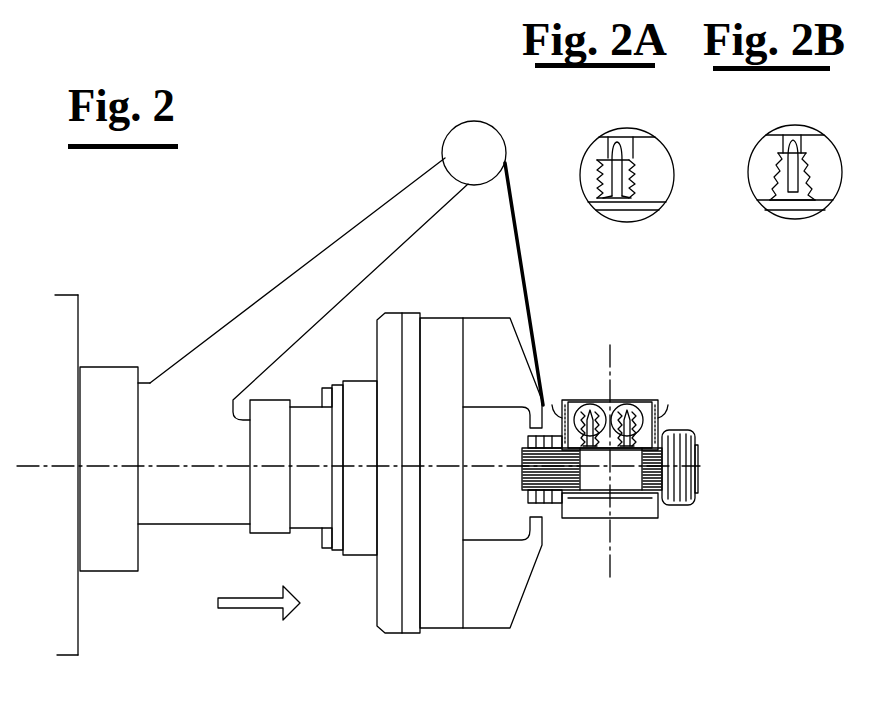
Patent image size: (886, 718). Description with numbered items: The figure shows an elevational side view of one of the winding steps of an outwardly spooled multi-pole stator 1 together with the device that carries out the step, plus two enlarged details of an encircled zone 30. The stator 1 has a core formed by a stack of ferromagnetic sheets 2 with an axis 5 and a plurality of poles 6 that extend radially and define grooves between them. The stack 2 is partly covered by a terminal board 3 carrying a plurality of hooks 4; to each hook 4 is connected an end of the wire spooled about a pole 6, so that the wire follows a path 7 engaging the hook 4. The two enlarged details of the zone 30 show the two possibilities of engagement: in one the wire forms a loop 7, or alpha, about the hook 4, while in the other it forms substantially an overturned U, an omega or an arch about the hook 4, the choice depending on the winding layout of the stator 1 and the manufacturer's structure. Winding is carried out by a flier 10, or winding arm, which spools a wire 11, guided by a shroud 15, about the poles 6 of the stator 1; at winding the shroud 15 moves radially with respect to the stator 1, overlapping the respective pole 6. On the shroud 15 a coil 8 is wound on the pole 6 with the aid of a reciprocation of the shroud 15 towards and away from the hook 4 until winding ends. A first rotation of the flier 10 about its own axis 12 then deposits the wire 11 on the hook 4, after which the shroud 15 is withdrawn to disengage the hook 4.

In FIG. 2, the multi-pole stator 1 is at (688, 472).
In FIG. 2, the stack of ferromagnetic sheets 2 is at (553, 483).
In FIG. 2, the terminal board 3 is at (652, 402).
In FIG. 2, the hook 4 is at (612, 410).
In FIG. 2A, the hook 4 is at (633, 170).
In FIG. 2B, the hook 4 is at (805, 155).
In FIG. 2, the axis 5 is at (612, 537).
In FIG. 2, the pole 6 is at (698, 473).
In FIG. 2, the wire path 7 is at (600, 420).
In FIG. 2A, the wire path 7 is at (605, 187).
In FIG. 2B, the wire path 7 is at (780, 175).
In FIG. 2, the coil 8 is at (690, 502).
In FIG. 2, the flier 10 is at (350, 245).
In FIG. 2, the wire 11 is at (517, 248).
In FIG. 2, the flier axis 12 is at (100, 465).
In FIG. 2, the shroud 15 is at (345, 637).
In FIG. 2, the encircled zone 30 is at (657, 408).
In FIG. 2A, the encircled zone 30 is at (585, 153).
In FIG. 2B, the encircled zone 30 is at (757, 152).